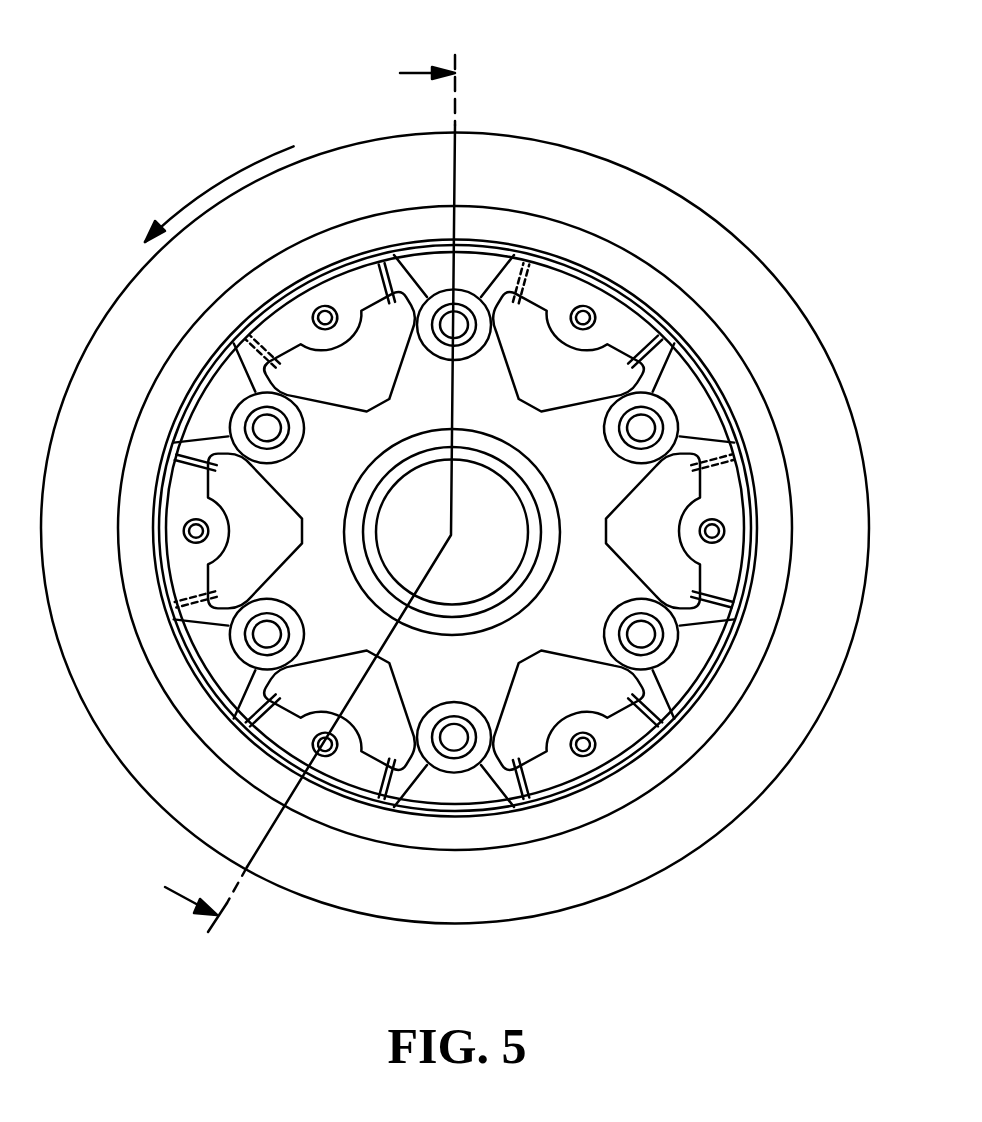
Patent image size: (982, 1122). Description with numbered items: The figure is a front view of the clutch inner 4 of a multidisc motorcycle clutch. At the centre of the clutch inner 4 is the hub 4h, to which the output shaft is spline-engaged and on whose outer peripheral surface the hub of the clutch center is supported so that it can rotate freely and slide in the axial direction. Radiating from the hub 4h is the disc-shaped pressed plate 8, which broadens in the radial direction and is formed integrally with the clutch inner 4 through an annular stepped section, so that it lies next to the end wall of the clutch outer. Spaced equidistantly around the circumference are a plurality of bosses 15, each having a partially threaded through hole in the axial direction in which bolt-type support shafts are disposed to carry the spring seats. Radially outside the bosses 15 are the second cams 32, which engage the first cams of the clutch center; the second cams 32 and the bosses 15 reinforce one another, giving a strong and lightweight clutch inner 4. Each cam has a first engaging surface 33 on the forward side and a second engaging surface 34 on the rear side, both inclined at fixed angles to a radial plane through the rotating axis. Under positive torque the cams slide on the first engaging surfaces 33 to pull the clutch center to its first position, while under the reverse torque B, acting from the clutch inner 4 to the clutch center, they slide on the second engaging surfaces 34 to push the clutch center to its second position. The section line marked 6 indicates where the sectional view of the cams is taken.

The clutch inner 4 is at (578, 466).
The hub of the clutch inner 4h is at (503, 478).
The pressed plate 8 is at (642, 197).
The bosses 15 is at (438, 355).
The second cams 32 is at (513, 262).
The first engaging surfaces 33 is at (533, 270).
The second engaging surfaces 34 is at (363, 263).
The reverse torque B is at (215, 190).
The oil seal 6 is at (303, 492).